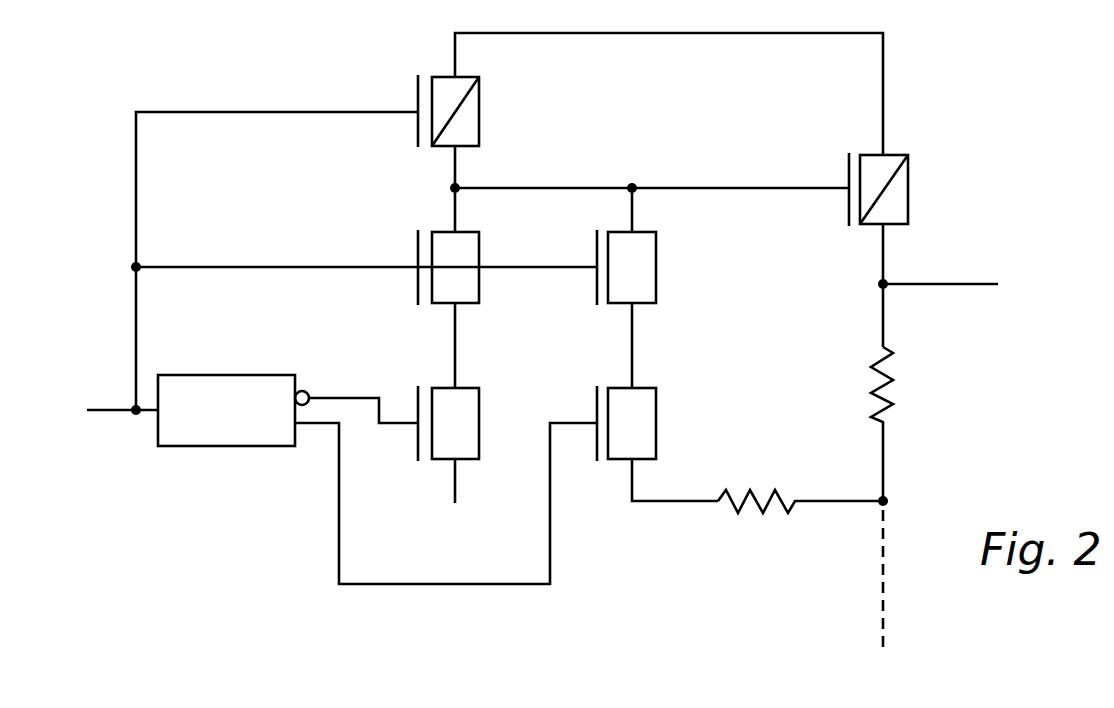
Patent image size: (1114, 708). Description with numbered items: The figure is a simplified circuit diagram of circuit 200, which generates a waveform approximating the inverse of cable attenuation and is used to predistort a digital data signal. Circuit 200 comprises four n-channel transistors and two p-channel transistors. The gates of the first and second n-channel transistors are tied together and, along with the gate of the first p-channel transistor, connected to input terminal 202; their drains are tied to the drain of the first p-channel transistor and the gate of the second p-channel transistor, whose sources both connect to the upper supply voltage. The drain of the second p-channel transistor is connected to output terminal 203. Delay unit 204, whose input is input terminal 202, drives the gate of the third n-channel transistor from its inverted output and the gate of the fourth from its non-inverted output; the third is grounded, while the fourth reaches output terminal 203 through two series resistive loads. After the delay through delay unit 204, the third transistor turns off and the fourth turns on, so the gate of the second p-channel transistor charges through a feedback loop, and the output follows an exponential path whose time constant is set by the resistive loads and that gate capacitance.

The circuit 200 is at (542, 341).
The input terminal 202 is at (104, 374).
The output terminal 203 is at (950, 285).
The delay unit 204 is at (246, 375).